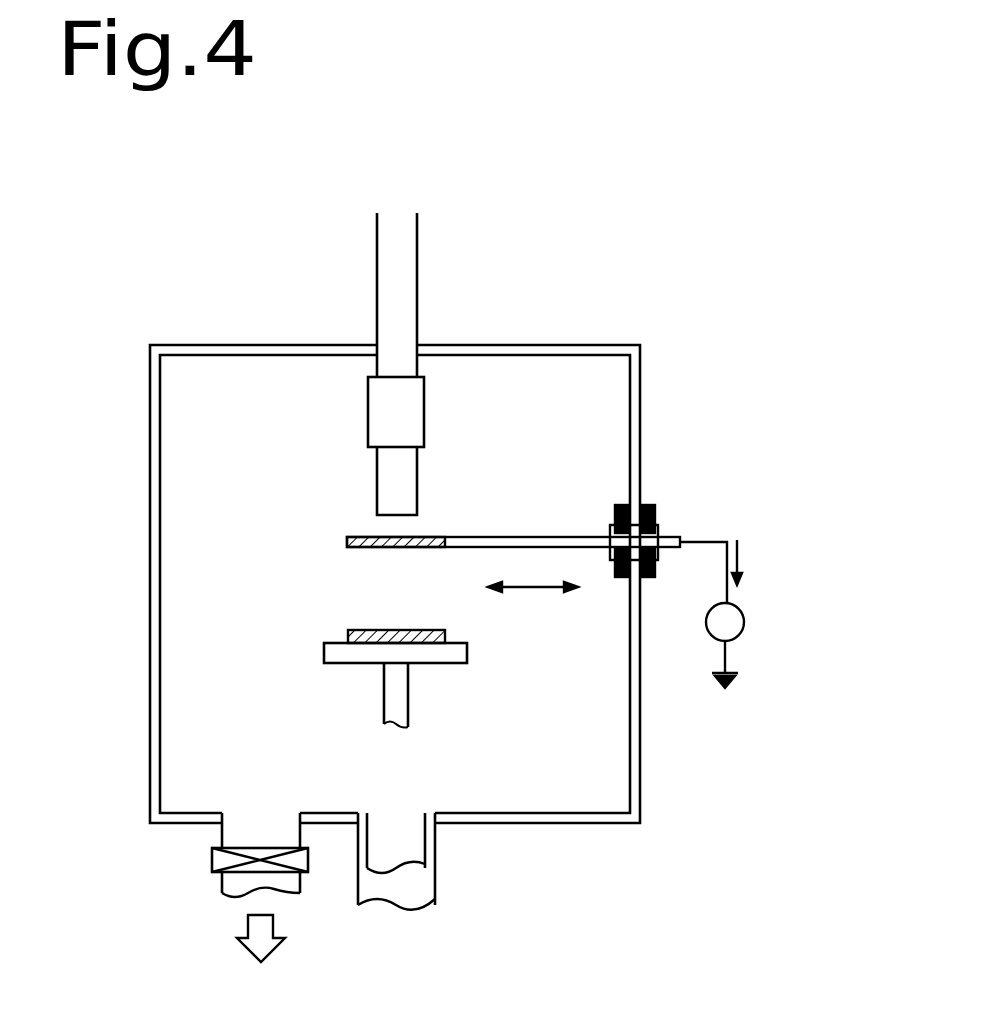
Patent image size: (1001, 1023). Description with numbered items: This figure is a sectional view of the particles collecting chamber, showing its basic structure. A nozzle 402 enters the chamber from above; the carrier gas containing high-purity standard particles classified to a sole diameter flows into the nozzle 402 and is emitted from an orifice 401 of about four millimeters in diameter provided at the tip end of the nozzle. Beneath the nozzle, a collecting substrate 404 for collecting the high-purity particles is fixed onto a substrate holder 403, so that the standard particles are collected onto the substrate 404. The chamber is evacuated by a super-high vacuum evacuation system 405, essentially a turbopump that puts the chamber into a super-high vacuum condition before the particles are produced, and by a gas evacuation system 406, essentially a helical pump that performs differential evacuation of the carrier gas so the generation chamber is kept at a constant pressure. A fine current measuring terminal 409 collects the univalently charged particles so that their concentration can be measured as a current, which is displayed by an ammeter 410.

The orifice 401 is at (182, 620).
The nozzle 402 is at (388, 472).
The substrate holder 403 is at (408, 657).
The collecting substrate 404 is at (375, 630).
The super-high vacuum evacuation system 405 is at (227, 893).
The gas evacuation system 406 is at (407, 892).
The fine current measuring terminal 409 is at (357, 541).
The ammeter 410 is at (737, 635).